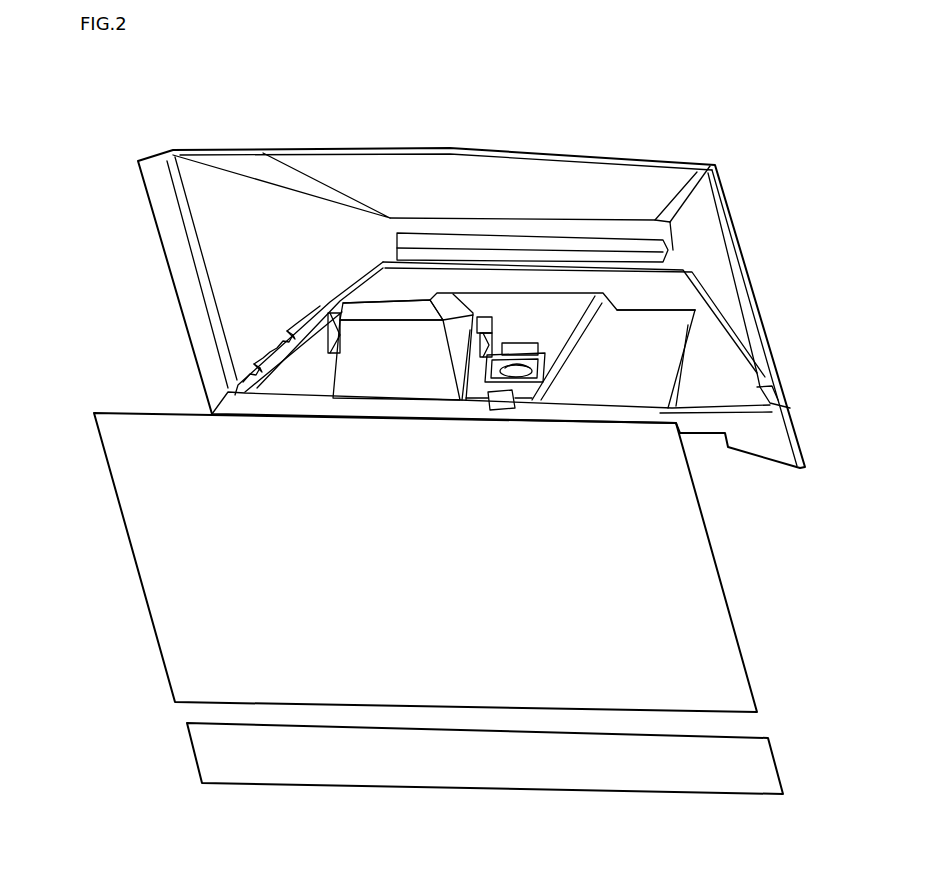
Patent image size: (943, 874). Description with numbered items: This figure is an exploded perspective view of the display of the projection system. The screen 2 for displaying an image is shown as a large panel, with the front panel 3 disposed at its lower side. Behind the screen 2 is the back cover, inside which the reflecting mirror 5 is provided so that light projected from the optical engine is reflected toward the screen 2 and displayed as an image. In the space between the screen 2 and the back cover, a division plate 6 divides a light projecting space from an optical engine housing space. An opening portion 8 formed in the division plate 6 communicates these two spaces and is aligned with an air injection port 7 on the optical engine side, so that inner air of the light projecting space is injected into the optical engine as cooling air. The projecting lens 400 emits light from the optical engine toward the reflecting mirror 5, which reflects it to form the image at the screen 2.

The screen 2 is at (117, 452).
The front panel 3 is at (297, 770).
The reflecting mirror 5 is at (497, 170).
The division plate 6 is at (658, 367).
The air injection port 7 is at (470, 337).
The opening portion 8 is at (483, 317).
The projecting lens 400 is at (536, 370).